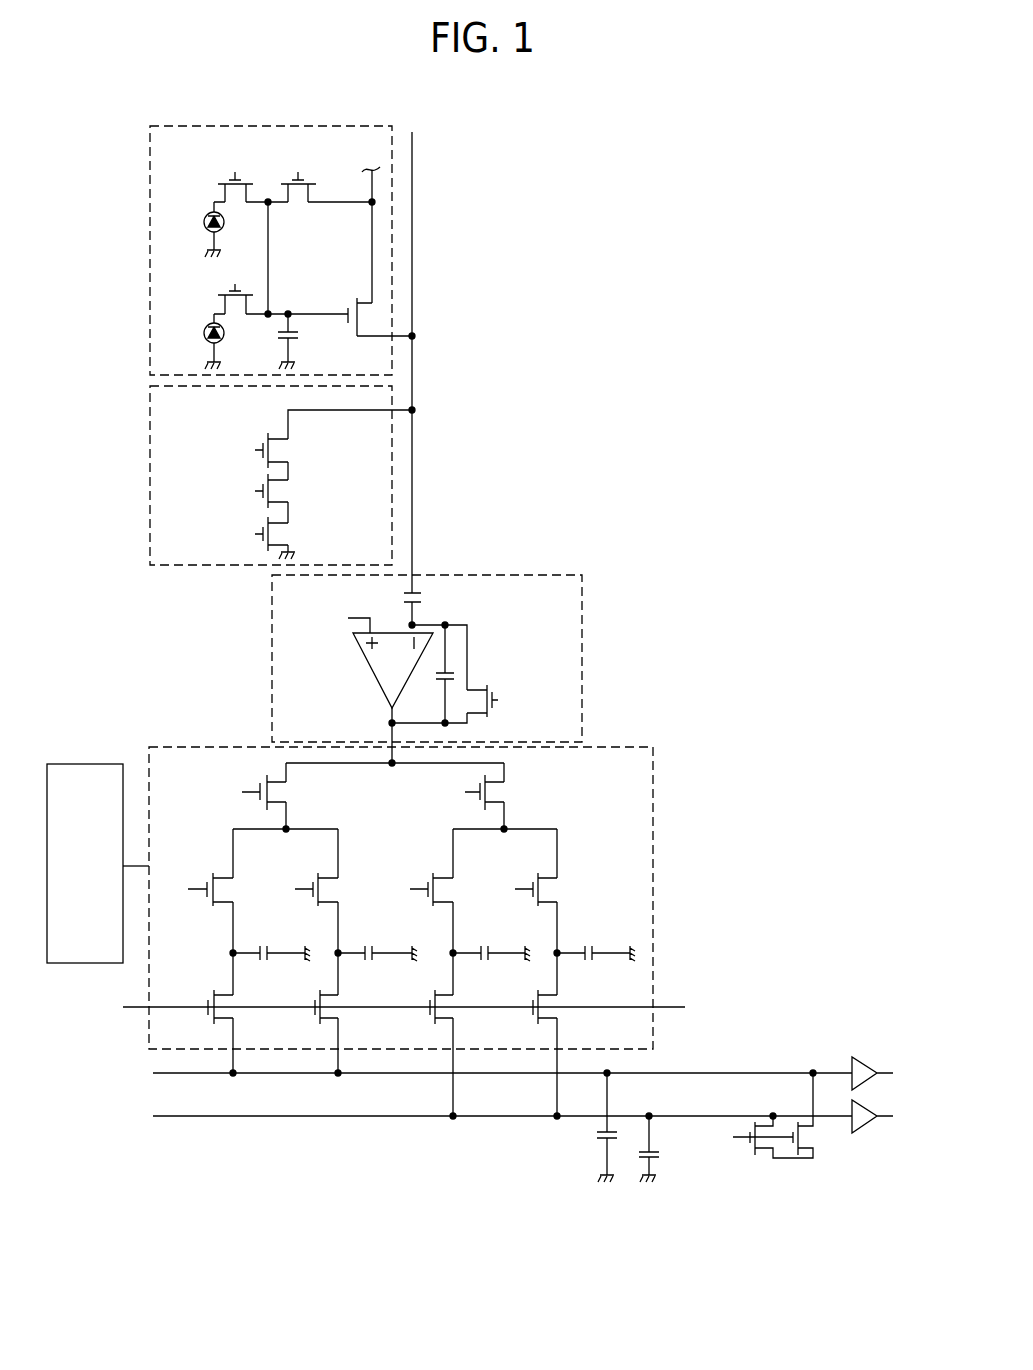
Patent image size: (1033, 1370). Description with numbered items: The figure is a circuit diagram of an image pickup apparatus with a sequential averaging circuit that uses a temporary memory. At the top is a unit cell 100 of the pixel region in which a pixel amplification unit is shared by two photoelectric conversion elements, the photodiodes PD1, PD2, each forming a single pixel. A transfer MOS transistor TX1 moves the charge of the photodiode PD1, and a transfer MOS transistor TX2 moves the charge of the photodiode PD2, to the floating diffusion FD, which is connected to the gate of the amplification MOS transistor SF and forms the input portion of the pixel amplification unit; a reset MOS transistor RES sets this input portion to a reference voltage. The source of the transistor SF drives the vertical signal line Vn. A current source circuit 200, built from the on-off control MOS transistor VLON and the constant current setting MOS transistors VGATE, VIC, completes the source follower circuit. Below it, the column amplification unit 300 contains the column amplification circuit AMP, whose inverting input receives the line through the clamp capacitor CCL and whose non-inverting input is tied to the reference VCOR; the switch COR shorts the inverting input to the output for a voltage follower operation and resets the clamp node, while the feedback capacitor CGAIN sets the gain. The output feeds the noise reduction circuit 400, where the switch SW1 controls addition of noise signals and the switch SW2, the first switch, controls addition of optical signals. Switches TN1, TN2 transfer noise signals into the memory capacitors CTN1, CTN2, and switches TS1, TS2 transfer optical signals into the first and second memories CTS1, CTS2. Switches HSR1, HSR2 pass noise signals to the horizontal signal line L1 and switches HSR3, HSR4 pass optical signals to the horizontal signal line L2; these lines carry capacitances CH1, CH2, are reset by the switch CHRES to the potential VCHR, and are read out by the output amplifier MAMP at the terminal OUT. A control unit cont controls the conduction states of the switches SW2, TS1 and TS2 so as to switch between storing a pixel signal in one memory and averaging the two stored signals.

The unit cell 100 is at (150, 168).
The current source circuit 200 is at (150, 423).
The column amplification unit 300 is at (582, 601).
The noise reduction circuit 400 is at (616, 747).
The transfer MOS transistor TX1 is at (235, 170).
The transfer MOS transistor TX2 is at (235, 287).
The reset MOS transistor RES is at (298, 170).
The photodiode PD1 is at (189, 229).
The photodiode PD2 is at (189, 341).
The floating diffusion FD is at (306, 341).
The amplification MOS transistor SF is at (367, 304).
The on-off control MOS transistor VLON is at (240, 450).
The constant current setting MOS transistor VGATE is at (233, 491).
The constant current setting MOS transistor VIC is at (250, 534).
The vertical signal line Vn is at (430, 378).
The clamp capacitor CCL is at (417, 591).
The reference voltage input VCOR is at (326, 617).
The column amplification circuit AMP is at (360, 670).
The capacitor CGAIN is at (447, 672).
The switch COR is at (508, 700).
The control unit cont is at (98, 863).
The switch SW1 is at (238, 792).
The switch SW2 is at (459, 792).
The switch TN1 is at (206, 875).
The switch TN2 is at (307, 875).
The switch TS1 is at (422, 875).
The switch TS2 is at (527, 875).
The capacitor CTN1 is at (271, 930).
The capacitor CTN2 is at (377, 930).
The capacitor CTS1 is at (491, 930).
The capacitor CTS2 is at (596, 930).
The switch HSR1 is at (196, 994).
The switch HSR2 is at (299, 994).
The switch HSR3 is at (414, 994).
The switch HSR4 is at (518, 994).
The horizontal signal line L1 is at (502, 1060).
The horizontal signal line L2 is at (502, 1101).
The horizontal line capacitance 1 CH1 is at (581, 1127).
The horizontal line capacitance 2 CH2 is at (668, 1161).
The switch CHRES is at (734, 1115).
The reset potential VCHR is at (817, 1183).
The output amplifier MAMP is at (856, 1072).
The output terminal OUT is at (907, 1093).